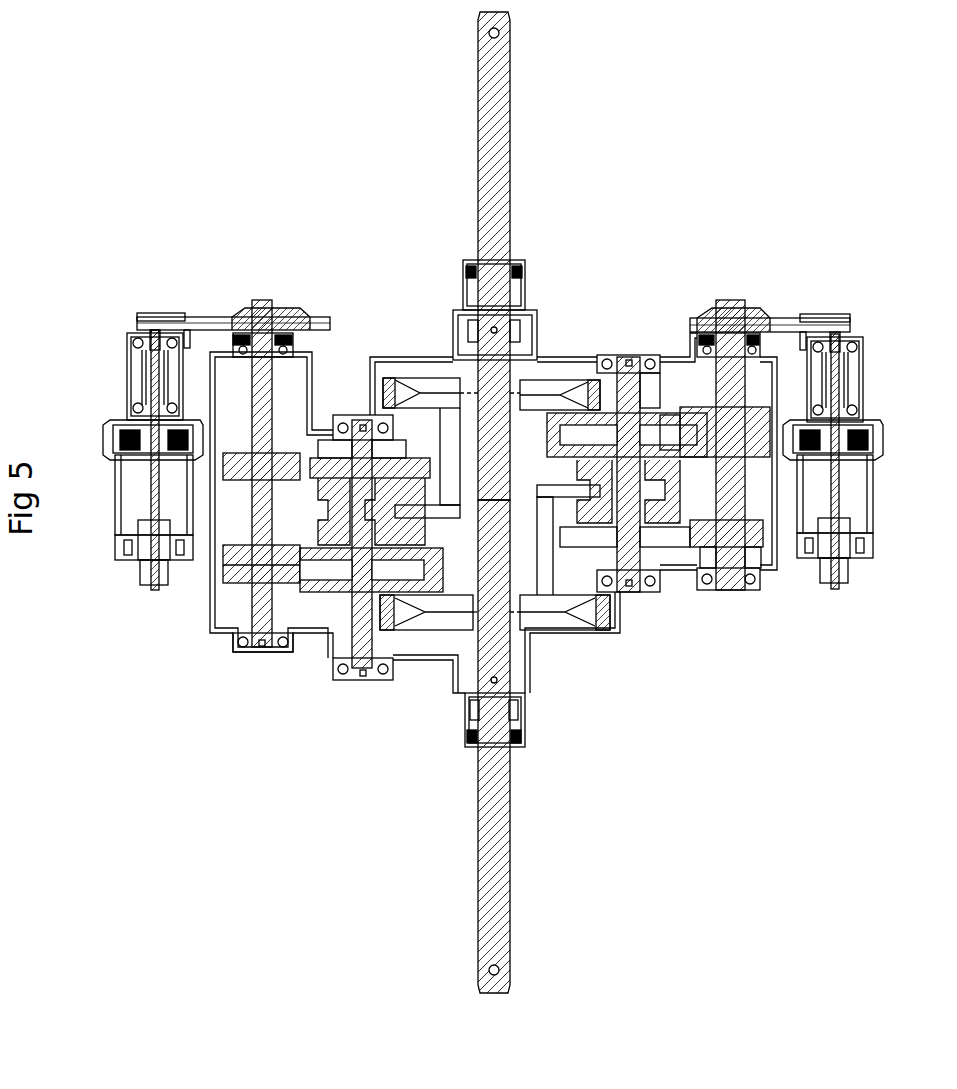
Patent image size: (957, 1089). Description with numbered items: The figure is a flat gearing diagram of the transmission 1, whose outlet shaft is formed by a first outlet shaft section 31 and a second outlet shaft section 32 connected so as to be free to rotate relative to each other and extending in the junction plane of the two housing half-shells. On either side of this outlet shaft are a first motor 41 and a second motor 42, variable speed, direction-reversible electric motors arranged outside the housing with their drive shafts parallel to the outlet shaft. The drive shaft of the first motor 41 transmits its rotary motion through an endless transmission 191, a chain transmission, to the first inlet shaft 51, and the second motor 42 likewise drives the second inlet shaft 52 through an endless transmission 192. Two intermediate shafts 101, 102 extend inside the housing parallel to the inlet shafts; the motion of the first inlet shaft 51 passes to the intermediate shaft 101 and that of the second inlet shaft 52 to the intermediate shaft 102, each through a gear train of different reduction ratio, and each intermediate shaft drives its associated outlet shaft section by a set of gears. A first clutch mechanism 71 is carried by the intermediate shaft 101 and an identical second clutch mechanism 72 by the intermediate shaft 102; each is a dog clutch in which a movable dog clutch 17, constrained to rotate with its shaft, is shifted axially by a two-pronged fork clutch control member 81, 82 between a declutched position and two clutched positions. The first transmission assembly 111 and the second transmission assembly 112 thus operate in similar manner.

The transmission 1 is at (333, 260).
The movable dog clutch 17 is at (705, 548).
The first outlet shaft section 31 is at (478, 830).
The second outlet shaft section 32 is at (478, 178).
The first motor 41 is at (112, 490).
The second motor 42 is at (880, 522).
The first inlet shaft 51 is at (228, 640).
The second inlet shaft 52 is at (757, 590).
The first clutch mechanism 71 is at (446, 662).
The second clutch mechanism 72 is at (655, 600).
The clutch control member 81 is at (452, 502).
The clutch control member 82 is at (540, 486).
The intermediate shaft 101 is at (366, 662).
The intermediate shaft 102 is at (627, 383).
The first transmission assembly 111 is at (193, 428).
The second transmission assembly 112 is at (781, 400).
The endless transmission 191 is at (232, 318).
The endless transmission 192 is at (782, 318).